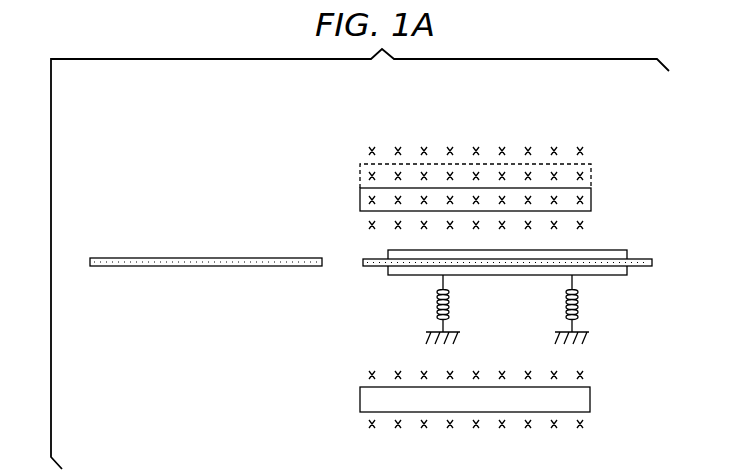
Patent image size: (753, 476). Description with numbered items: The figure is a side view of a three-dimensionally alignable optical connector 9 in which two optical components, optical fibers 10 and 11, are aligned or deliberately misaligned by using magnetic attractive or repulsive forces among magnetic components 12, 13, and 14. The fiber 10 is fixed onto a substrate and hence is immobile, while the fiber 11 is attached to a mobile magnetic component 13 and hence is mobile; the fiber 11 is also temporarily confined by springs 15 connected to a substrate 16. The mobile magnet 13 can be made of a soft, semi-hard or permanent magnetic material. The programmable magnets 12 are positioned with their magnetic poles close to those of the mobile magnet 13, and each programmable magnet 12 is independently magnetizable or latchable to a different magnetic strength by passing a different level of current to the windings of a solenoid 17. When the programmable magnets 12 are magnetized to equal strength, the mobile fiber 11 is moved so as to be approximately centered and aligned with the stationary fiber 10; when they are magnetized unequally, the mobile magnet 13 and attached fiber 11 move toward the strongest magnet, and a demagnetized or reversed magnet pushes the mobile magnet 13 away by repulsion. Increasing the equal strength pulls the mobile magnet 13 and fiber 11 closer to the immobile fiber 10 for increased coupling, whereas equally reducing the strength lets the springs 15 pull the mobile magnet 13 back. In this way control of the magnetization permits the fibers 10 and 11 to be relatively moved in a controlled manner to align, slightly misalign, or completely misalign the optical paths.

The three-dimensionally alignable optical connector 9 is at (311, 144).
The optical fiber 10 is at (218, 257).
The optical fiber 11 is at (363, 262).
The programmable magnet 12 is at (590, 164).
The mobile magnetic component 13 is at (620, 250).
The magnetic component 14 is at (358, 412).
The spring 15 is at (566, 312).
The substrate 16 is at (432, 332).
The solenoid 17 is at (424, 143).